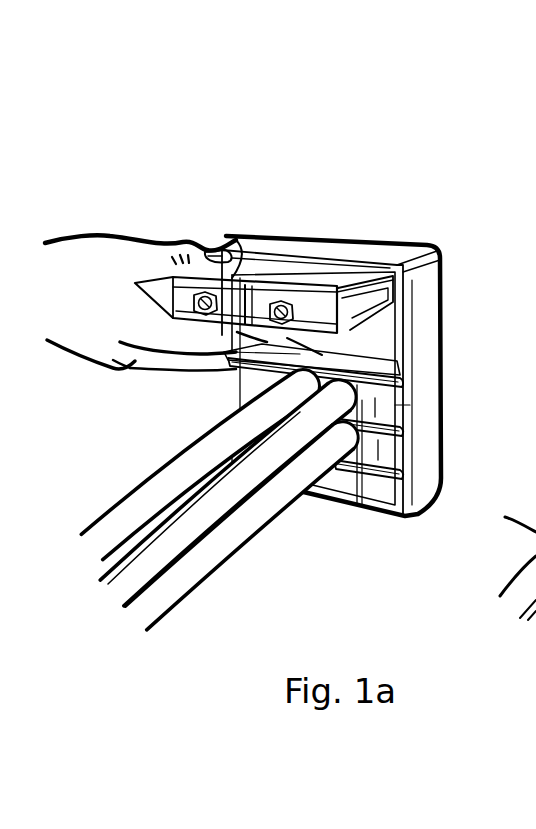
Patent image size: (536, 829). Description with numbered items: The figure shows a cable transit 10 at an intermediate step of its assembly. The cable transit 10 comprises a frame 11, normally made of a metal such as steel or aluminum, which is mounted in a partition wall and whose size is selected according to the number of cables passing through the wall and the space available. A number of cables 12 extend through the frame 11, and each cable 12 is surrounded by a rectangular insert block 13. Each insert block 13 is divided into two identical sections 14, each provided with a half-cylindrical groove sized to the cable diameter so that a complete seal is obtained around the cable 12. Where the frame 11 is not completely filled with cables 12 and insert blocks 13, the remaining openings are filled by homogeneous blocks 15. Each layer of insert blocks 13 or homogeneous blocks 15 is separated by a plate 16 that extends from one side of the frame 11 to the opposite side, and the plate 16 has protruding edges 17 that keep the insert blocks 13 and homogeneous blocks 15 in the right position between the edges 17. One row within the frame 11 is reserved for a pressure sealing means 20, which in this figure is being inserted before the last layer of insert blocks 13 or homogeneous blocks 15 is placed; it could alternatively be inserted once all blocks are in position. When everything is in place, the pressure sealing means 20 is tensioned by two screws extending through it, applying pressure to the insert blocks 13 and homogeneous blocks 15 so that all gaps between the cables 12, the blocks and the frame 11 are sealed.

The cable transit 10 is at (363, 224).
The frame 11 is at (424, 315).
The cables 12 is at (242, 510).
The insert block 13 is at (355, 407).
The sections 14 is at (352, 392).
The homogeneous blocks 15 is at (383, 445).
The plate 16 is at (220, 362).
The protruding edges 17 is at (345, 352).
The pressure sealing means 20 is at (273, 262).